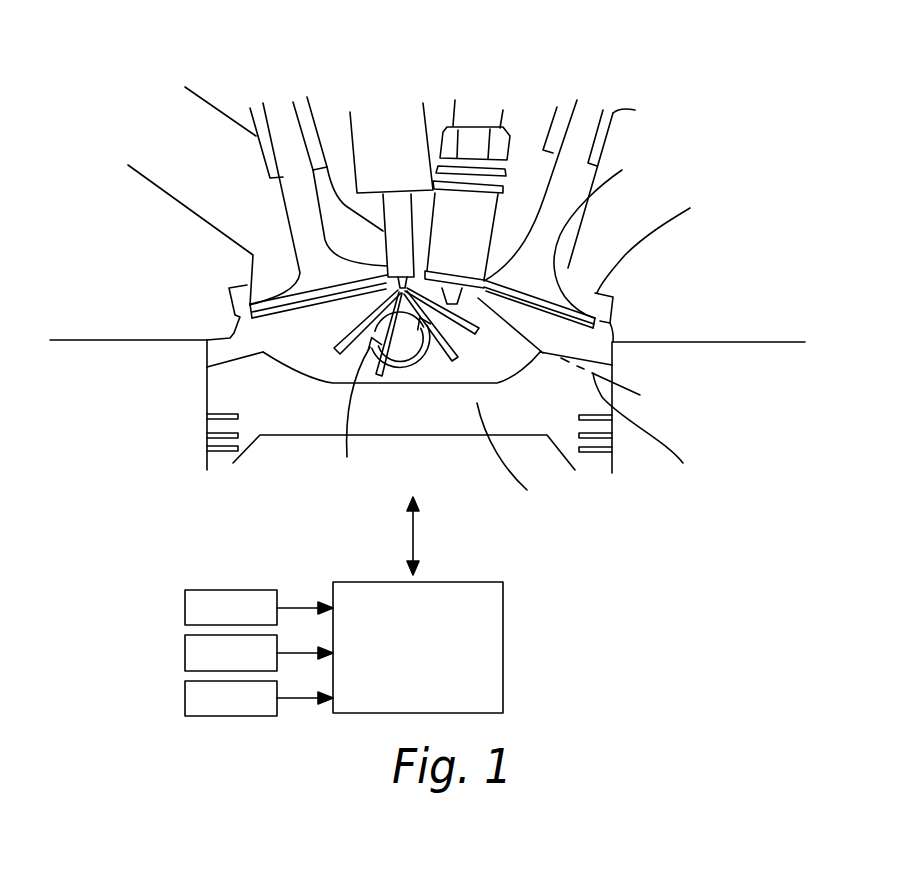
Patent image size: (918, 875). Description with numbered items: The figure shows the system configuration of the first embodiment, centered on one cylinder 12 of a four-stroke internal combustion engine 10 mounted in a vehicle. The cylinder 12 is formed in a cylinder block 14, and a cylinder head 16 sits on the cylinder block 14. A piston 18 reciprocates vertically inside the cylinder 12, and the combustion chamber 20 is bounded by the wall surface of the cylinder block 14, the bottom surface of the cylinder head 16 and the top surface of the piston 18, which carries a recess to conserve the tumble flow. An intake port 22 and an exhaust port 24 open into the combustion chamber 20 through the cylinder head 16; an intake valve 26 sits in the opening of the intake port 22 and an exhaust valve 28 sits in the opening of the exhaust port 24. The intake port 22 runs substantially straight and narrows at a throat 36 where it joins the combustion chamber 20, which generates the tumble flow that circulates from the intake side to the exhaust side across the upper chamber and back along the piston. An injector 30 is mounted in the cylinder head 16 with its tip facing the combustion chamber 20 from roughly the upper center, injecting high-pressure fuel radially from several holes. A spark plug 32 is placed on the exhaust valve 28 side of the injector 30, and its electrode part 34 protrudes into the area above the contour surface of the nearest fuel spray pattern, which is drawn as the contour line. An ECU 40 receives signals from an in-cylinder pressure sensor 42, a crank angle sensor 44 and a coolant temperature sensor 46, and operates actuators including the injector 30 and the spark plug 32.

The internal combustion engine 10 is at (195, 496).
The cylinder 12 is at (186, 393).
The cylinder block 14 is at (718, 401).
The cylinder head 16 is at (718, 319).
The piston 18 is at (457, 405).
The combustion chamber 20 is at (303, 353).
The intake port 22 is at (247, 181).
The exhaust port 24 is at (645, 212).
The intake valve 26 is at (285, 117).
The exhaust valve 28 is at (580, 117).
The injector 30 is at (387, 110).
The spark plug 32 is at (482, 107).
The electrode part 34 is at (622, 170).
The throat 36 is at (263, 275).
The ECU 40 is at (504, 648).
The in-cylinder pressure sensor 42 is at (185, 605).
The crank angle sensor 44 is at (185, 650).
The temperature sensor 46 is at (185, 695).